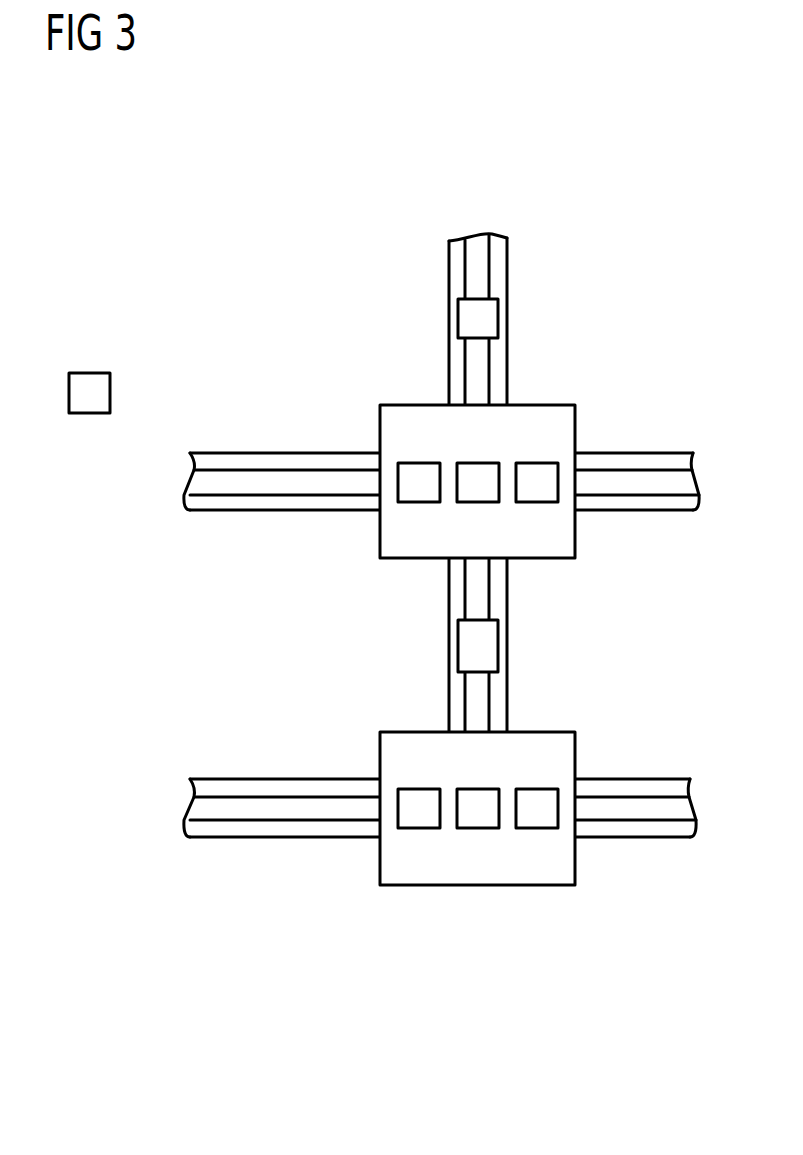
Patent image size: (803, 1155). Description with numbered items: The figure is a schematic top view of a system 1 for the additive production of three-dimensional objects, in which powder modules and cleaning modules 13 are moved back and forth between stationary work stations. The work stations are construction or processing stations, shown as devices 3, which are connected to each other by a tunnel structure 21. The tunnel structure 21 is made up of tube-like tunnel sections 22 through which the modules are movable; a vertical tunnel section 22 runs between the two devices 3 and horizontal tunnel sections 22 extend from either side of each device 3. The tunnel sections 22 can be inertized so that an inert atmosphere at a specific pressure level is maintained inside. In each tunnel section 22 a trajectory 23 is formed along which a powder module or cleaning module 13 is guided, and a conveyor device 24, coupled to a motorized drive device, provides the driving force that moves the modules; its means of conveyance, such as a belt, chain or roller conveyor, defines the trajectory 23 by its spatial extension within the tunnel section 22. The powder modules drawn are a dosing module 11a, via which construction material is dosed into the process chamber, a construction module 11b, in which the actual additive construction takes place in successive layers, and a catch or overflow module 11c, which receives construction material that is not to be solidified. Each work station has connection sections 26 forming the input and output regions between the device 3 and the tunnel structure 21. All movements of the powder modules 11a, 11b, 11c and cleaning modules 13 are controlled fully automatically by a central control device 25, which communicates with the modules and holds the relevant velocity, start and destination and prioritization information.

The system 1 is at (419, 153).
The device 3 is at (380, 532).
The dosing module 11a is at (417, 473).
The construction module 11b is at (470, 322).
The overflow module 11c is at (532, 490).
The cleaning module 13 is at (475, 473).
The tunnel structure 21 is at (649, 325).
The tunnel section 22 is at (508, 284).
The trajectory 23 is at (465, 275).
The conveyor device 24 is at (480, 354).
The central control device 25 is at (90, 373).
The connection section 26 is at (380, 458).